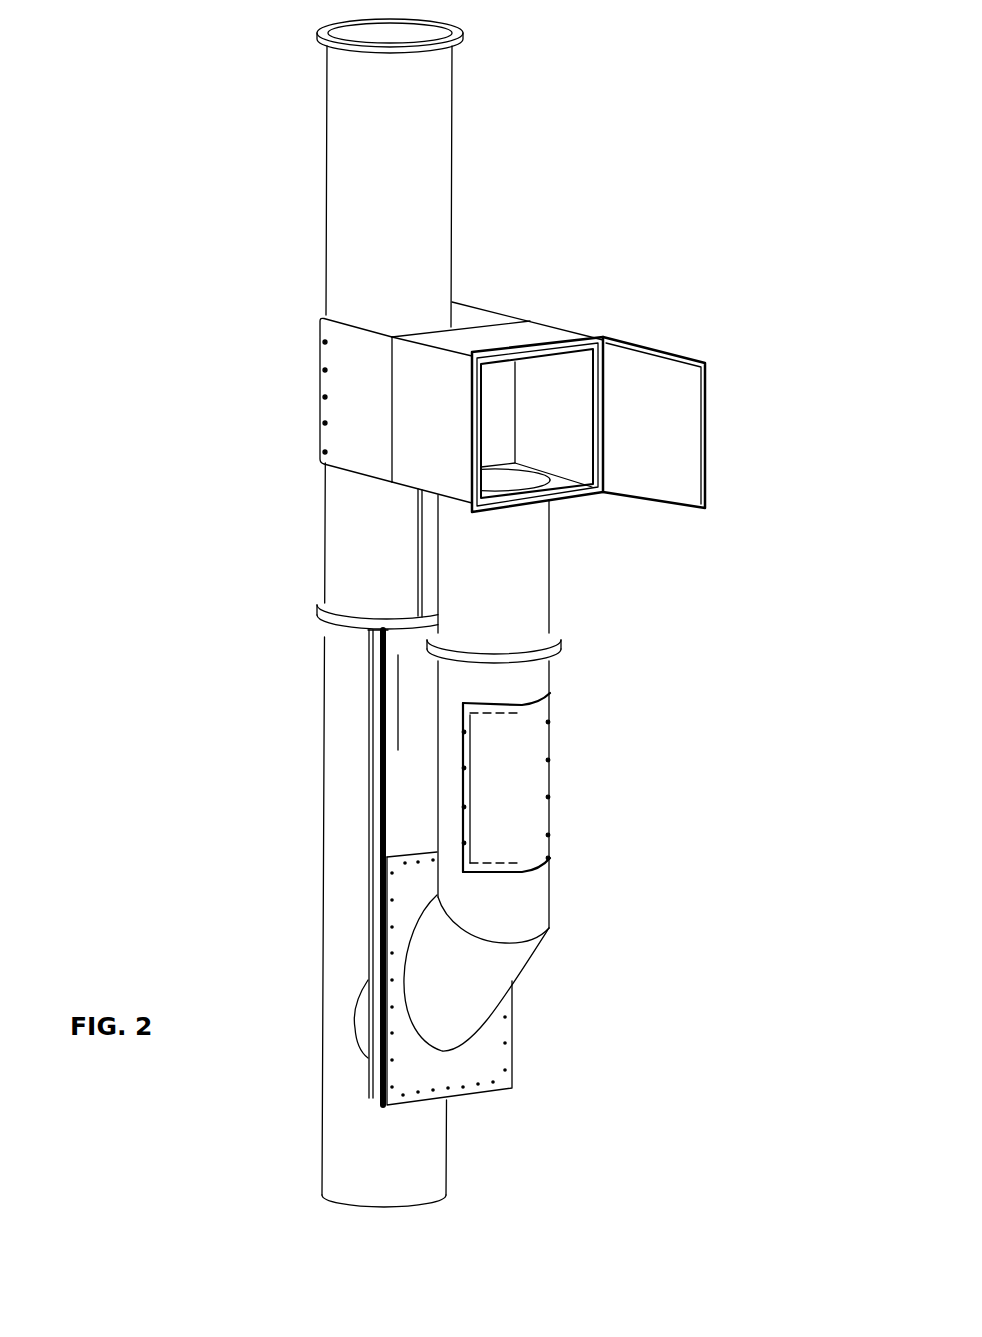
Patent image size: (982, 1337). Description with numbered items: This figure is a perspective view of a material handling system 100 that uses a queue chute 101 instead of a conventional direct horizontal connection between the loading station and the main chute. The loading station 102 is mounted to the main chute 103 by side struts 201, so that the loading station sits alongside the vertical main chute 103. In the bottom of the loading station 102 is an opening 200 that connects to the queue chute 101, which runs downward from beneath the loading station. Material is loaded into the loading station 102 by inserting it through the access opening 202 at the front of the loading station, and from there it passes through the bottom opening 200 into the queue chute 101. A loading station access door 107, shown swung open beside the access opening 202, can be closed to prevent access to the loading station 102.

The material handling system 100 is at (208, 243).
The queue chute 101 is at (510, 607).
The loading station 102 is at (509, 334).
The main chute 103 is at (352, 649).
The loading station access door 107 is at (635, 408).
The opening 200 is at (454, 401).
The side struts 201 is at (352, 416).
The access opening 202 is at (482, 448).